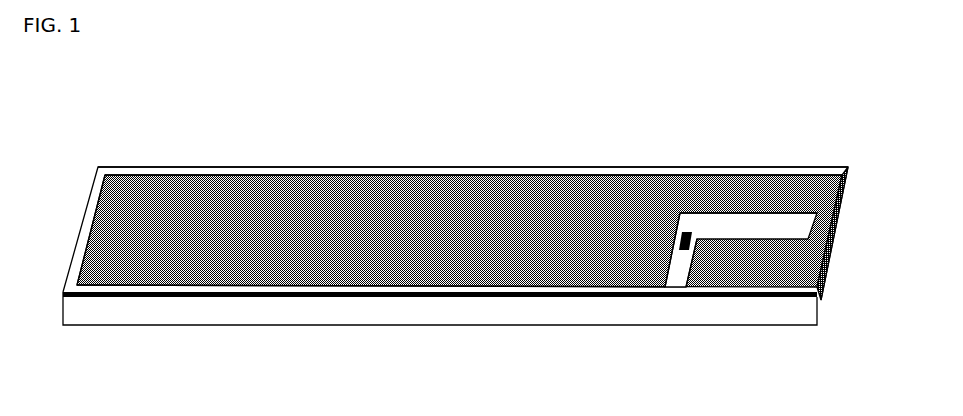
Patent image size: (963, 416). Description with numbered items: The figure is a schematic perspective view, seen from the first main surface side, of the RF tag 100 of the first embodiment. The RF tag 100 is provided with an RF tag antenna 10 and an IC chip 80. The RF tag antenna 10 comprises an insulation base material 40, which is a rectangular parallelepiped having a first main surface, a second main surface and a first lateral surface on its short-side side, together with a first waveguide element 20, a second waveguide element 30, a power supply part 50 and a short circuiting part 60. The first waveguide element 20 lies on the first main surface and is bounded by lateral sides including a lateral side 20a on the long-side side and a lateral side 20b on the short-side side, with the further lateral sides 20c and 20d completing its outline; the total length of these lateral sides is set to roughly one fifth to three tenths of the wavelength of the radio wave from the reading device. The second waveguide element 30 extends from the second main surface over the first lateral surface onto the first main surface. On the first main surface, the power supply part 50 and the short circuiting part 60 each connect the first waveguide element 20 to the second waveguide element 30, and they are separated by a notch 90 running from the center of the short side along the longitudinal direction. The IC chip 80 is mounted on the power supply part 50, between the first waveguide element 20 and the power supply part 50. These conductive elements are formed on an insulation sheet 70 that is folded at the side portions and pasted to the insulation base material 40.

The RF tag 100 is at (484, 243).
The RF tag antenna 10 is at (313, 190).
The first waveguide element 20 is at (459, 243).
The lateral side on the long-side side 20a is at (443, 282).
The lateral side on the short-side side 20b is at (87, 245).
The third edge of radiating element 20c is at (370, 175).
The fourth edge of radiating element 20d is at (677, 240).
The second waveguide element 30 is at (840, 230).
The insulation base material 40 is at (505, 315).
The power supply part 50 is at (718, 268).
The short circuiting part 60 is at (745, 198).
The insulation sheet 70 is at (505, 172).
The IC chip 80 is at (677, 233).
The notch 90 is at (780, 227).